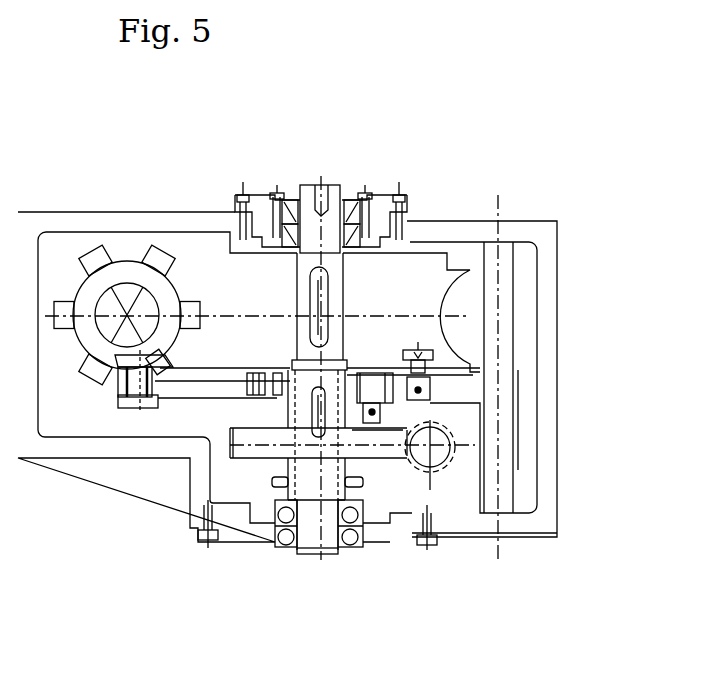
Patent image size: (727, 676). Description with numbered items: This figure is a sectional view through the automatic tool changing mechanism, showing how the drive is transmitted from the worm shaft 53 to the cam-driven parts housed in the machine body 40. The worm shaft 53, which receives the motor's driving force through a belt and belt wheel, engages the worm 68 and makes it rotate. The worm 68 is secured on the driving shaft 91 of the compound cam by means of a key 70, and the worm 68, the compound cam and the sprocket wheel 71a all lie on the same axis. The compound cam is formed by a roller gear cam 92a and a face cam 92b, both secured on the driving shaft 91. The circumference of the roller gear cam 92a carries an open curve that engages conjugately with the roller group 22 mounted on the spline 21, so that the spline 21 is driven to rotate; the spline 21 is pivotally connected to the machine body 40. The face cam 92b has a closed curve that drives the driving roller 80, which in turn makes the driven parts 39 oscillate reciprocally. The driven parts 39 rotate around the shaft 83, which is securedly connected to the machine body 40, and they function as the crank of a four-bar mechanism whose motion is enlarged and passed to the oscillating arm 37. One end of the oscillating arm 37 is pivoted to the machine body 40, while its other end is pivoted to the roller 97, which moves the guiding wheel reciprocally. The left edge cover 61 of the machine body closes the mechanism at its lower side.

The spline 21 is at (137, 270).
The roller group 22 is at (150, 283).
The roller gear cam 92a is at (190, 303).
The shaft 83 is at (503, 307).
The face cam 92b is at (430, 362).
The driving roller 80 is at (480, 372).
The driven parts 39 is at (470, 388).
The machine body 40 is at (547, 438).
The roller 97 is at (117, 400).
The oscillating arm 37 is at (207, 388).
The key 70 is at (315, 423).
The left edge cover of the machine body 61 is at (258, 525).
The driving shaft 91 is at (312, 515).
The sprocket wheel 71a is at (352, 465).
The worm 68 is at (360, 453).
The worm shaft 53 is at (445, 463).